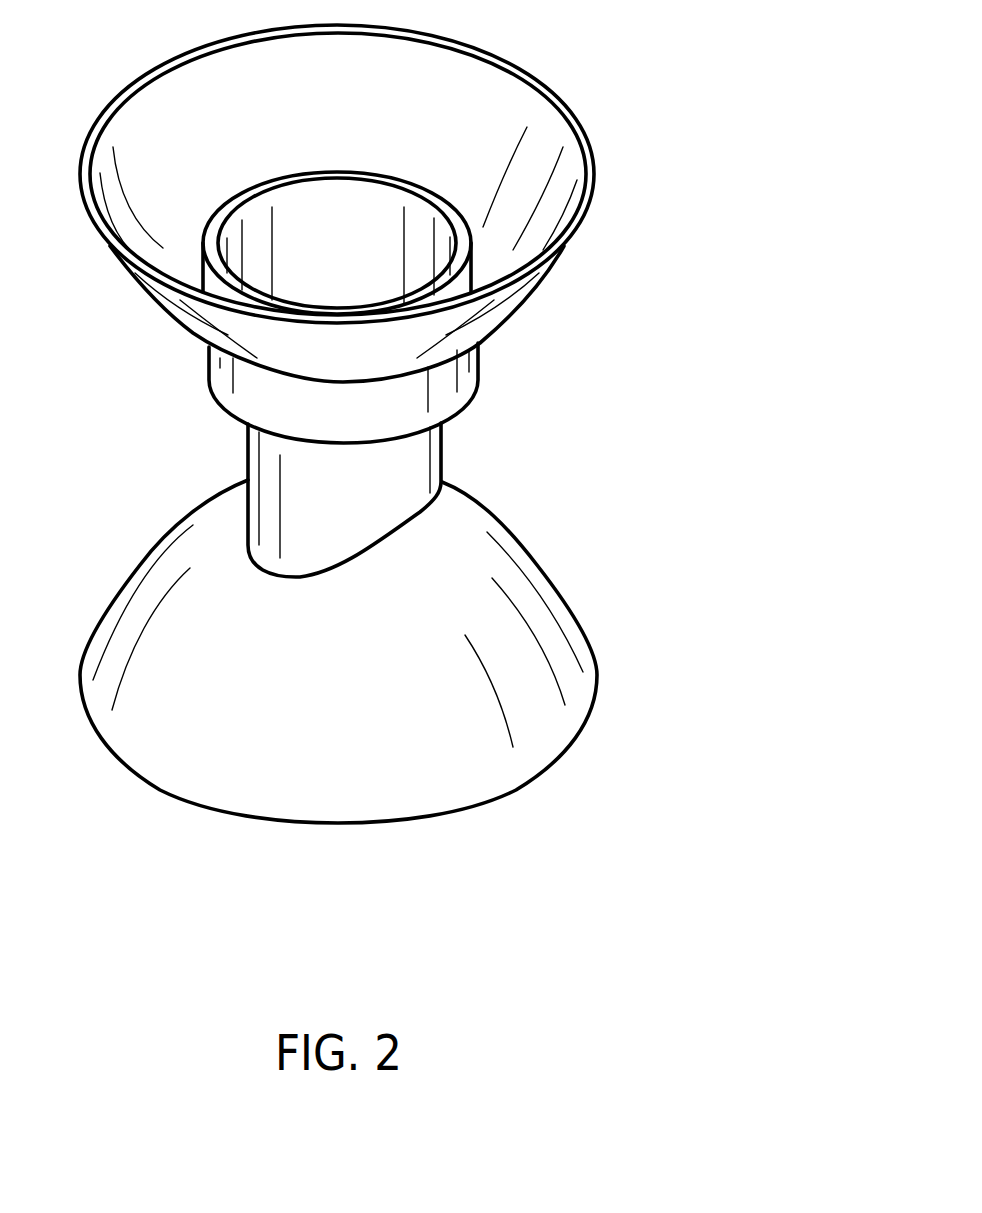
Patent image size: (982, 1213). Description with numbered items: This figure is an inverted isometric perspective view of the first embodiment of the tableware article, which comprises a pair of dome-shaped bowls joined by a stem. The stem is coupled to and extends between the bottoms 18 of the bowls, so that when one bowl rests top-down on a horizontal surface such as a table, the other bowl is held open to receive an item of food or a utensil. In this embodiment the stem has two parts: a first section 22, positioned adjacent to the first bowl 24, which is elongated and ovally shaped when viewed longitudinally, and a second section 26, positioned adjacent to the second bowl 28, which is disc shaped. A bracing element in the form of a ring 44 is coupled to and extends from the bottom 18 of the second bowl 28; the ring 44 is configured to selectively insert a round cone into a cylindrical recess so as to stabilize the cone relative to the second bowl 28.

The bottom 18 is at (384, 583).
The first section 22 is at (355, 490).
The first bowl 24 is at (588, 642).
The second section 26 is at (440, 383).
The second bowl 28 is at (562, 97).
The ring 44 is at (472, 238).